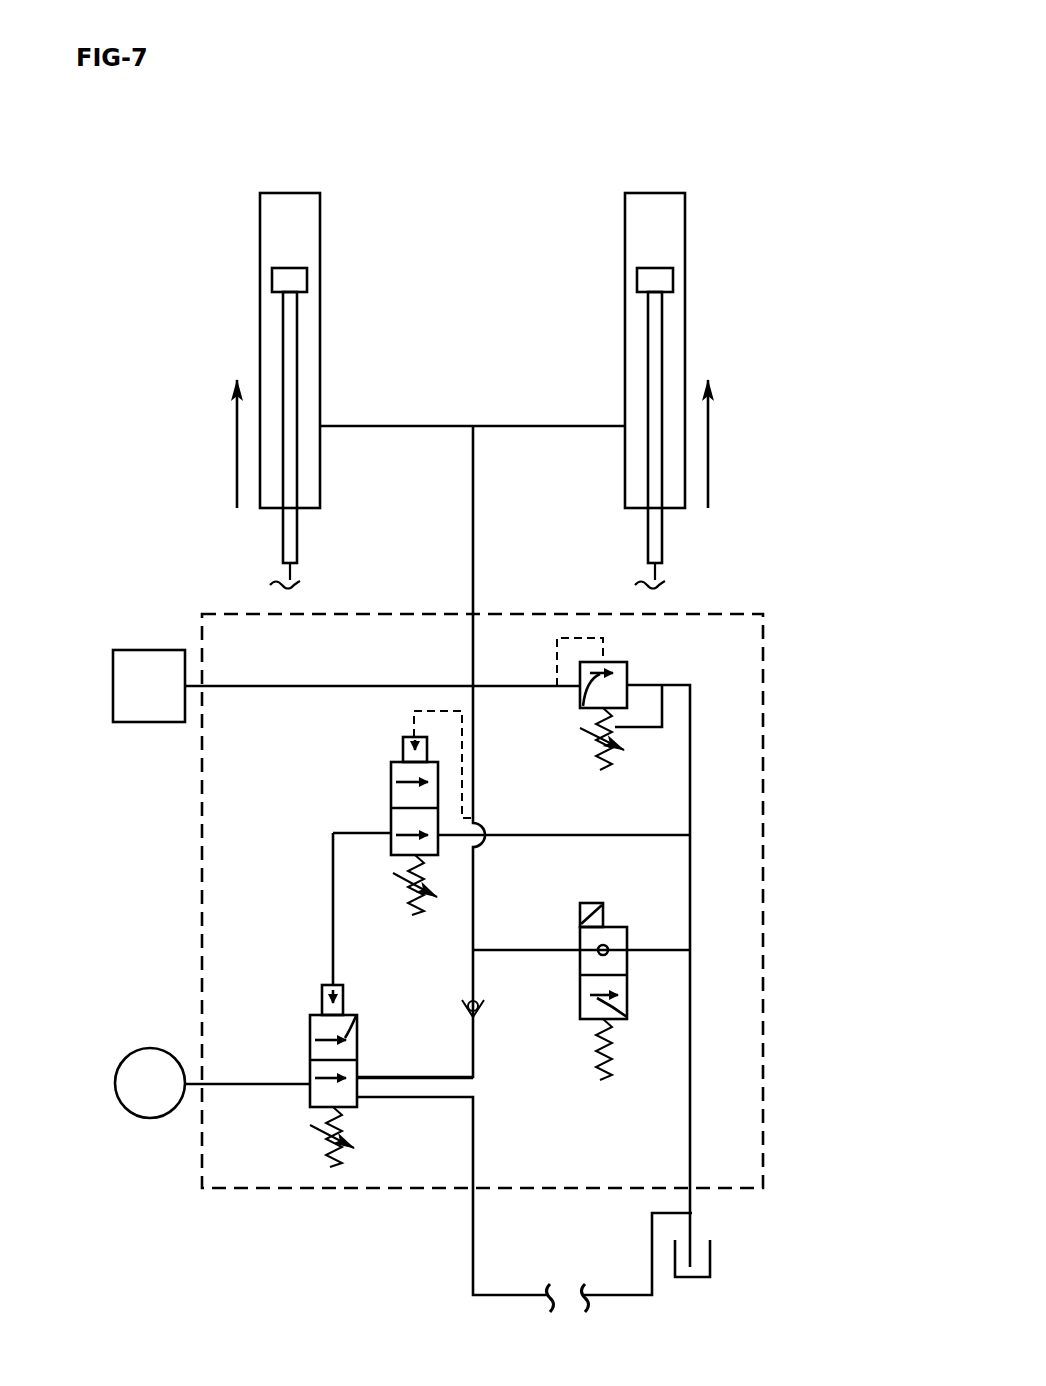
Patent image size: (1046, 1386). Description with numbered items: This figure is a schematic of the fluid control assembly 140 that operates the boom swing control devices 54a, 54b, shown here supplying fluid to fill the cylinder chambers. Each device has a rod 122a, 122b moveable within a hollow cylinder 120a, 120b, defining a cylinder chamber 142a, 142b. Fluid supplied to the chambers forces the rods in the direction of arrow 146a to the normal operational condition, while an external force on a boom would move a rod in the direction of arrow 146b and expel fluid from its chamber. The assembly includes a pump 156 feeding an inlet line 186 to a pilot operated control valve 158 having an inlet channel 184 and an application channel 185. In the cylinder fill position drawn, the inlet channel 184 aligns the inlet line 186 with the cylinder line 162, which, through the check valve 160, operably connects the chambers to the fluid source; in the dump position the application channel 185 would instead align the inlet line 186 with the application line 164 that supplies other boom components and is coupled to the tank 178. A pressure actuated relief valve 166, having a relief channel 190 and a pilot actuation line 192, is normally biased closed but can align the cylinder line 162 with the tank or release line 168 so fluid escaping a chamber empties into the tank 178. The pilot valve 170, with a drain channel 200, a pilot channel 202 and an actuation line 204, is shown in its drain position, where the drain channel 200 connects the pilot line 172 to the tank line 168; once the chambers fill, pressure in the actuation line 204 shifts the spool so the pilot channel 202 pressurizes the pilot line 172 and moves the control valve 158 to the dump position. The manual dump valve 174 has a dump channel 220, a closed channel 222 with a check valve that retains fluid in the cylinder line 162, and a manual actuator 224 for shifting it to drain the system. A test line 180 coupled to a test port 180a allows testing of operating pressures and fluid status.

The boom swing control device 54a is at (270, 322).
The boom swing control device 54b is at (739, 322).
The cylinder 120a is at (321, 232).
The cylinder 120b is at (686, 232).
The rod 122a is at (308, 280).
The rod 122b is at (673, 280).
The cylinder chamber 142a is at (272, 344).
The cylinder chamber 142b is at (672, 344).
The arrow 146a is at (236, 438).
The arrow 146b is at (710, 438).
The fluid control assembly 140 is at (706, 613).
The pump 156 is at (149, 1048).
The control valve 158 is at (325, 1026).
The check valve 160 is at (478, 1008).
The cylinder line 162 is at (470, 905).
The application line 164 is at (476, 1149).
The relief valve 166 is at (645, 658).
The tank or release line 168 is at (692, 768).
The pilot valve 170 is at (492, 773).
The pilot line 172 is at (332, 876).
The manual dump valve 174 is at (665, 975).
The tank 178 is at (712, 1250).
The test line 180 is at (293, 686).
The test port 180a is at (150, 650).
The inlet channel 184 is at (350, 1080).
The application channel 185 is at (344, 1036).
The inlet line 186 is at (253, 1083).
The relief channel 190 is at (590, 676).
The pilot actuation line 192 is at (580, 636).
The drain channel 200 is at (401, 835).
The pilot channel 202 is at (401, 783).
The actuation line 204 is at (440, 711).
The dump channel 220 is at (620, 1016).
The closed channel 222 is at (610, 952).
The manual actuator 224 is at (580, 903).